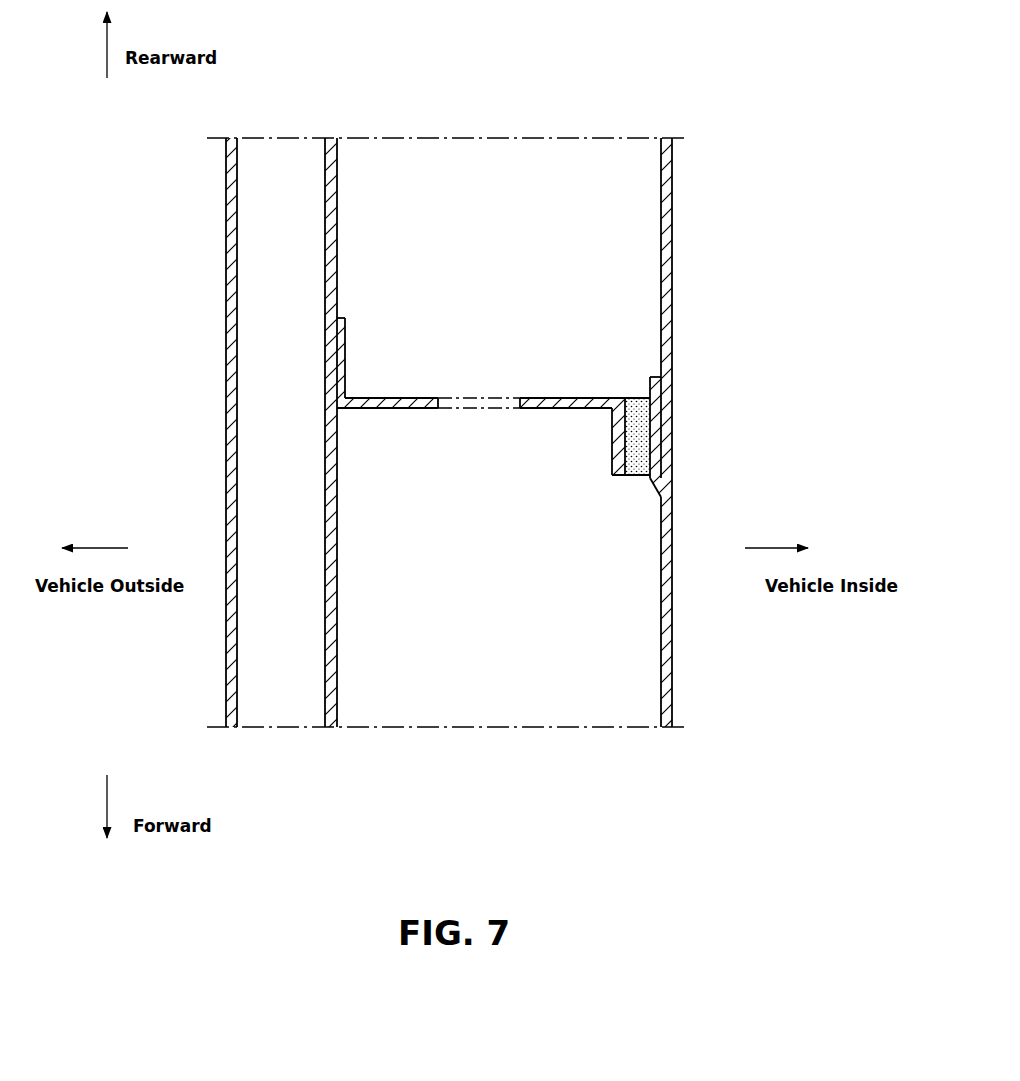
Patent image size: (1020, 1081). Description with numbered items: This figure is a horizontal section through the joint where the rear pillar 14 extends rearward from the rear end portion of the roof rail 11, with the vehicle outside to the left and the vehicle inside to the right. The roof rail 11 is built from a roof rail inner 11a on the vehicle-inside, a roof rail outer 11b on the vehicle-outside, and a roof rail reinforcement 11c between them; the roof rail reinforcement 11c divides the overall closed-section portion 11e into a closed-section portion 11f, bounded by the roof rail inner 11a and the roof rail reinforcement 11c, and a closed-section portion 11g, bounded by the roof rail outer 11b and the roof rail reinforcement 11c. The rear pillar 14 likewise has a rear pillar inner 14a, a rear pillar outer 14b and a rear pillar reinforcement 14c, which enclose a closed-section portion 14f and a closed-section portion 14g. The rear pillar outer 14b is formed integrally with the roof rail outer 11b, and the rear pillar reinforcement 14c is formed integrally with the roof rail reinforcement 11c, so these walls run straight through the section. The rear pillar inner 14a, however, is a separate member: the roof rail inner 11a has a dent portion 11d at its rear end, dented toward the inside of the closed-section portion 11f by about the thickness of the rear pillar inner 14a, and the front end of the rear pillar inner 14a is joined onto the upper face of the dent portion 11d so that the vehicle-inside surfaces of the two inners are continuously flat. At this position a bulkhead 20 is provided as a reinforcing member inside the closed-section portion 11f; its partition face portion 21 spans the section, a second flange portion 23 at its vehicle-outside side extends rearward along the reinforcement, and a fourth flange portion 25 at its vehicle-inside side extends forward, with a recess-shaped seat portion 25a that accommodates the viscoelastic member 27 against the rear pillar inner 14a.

The roof rail 11 is at (695, 668).
The roof rail inner 11a is at (672, 710).
The roof rail outer 11b is at (226, 700).
The roof rail reinforcement 11c is at (325, 655).
The dent portion 11d is at (648, 489).
The closed-section portion 11e is at (591, 699).
The closed-section portion 11f is at (464, 705).
The closed-section portion 11g is at (282, 705).
The rear pillar 14 is at (688, 240).
The rear pillar inner 14a is at (672, 292).
The rear pillar outer 14b is at (226, 285).
The rear pillar reinforcement 14c is at (325, 212).
The closed-section portion 14f is at (480, 160).
The closed-section portion 14g is at (282, 160).
The bulkhead 20 is at (428, 387).
The partition face portion 21 is at (391, 410).
The second flange portion 23 is at (345, 345).
The fourth flange portion 25 is at (613, 452).
The seat portion 25a is at (626, 392).
The viscoelastic member 27 is at (628, 438).